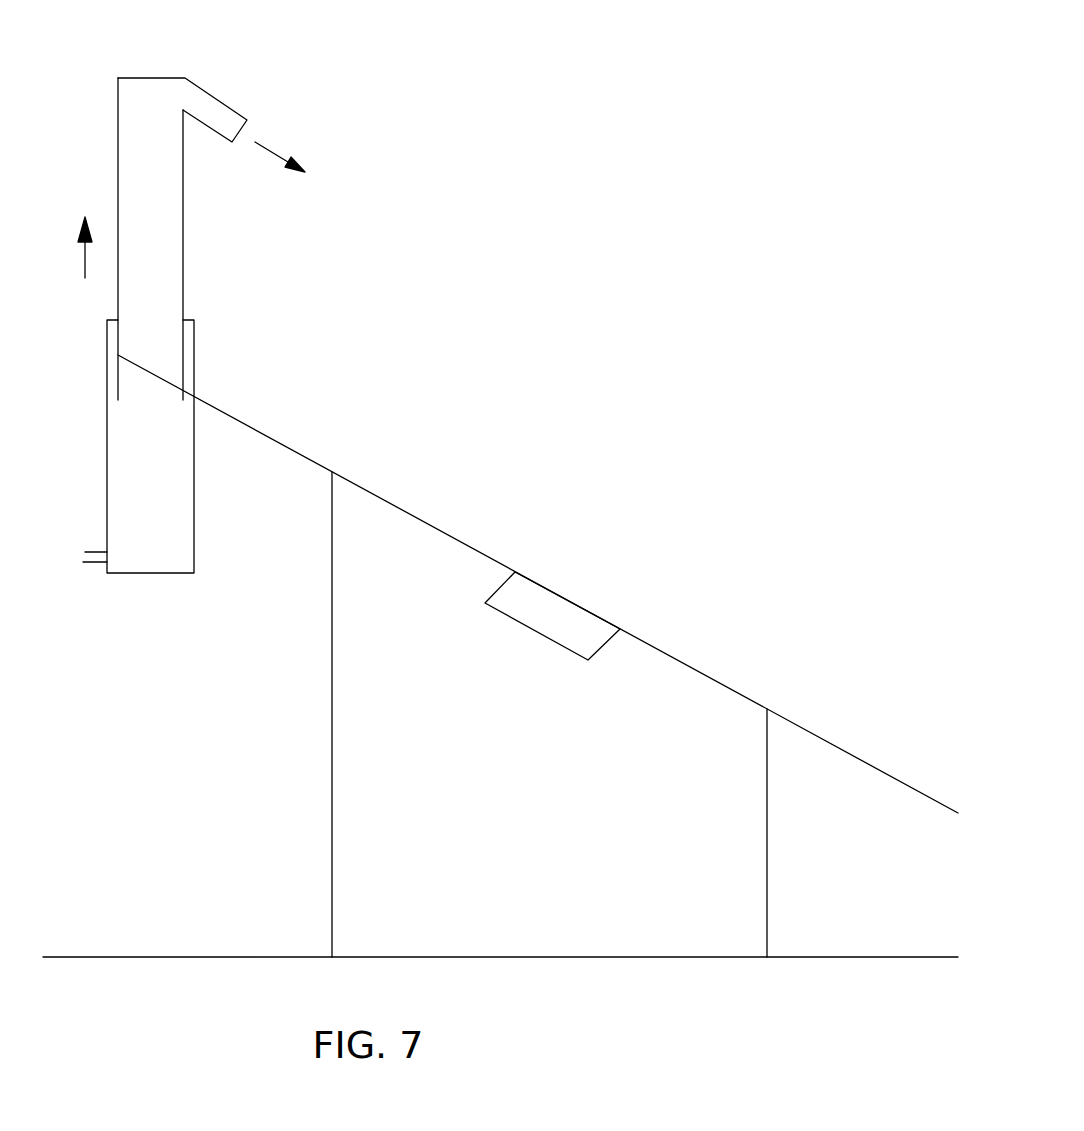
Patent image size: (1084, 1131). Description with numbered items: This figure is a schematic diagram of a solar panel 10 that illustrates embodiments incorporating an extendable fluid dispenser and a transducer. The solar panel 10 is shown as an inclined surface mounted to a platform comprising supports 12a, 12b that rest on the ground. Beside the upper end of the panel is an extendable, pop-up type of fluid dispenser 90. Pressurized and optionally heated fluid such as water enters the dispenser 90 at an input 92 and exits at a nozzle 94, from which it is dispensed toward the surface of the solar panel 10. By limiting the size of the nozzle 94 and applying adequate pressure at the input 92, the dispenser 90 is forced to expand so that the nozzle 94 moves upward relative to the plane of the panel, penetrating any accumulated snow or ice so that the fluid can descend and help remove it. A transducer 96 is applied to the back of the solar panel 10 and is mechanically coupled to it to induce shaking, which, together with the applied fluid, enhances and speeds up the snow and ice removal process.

The solar panel 10 is at (695, 668).
The support 12a is at (334, 822).
The support 12b is at (768, 843).
The fluid dispenser 90 is at (195, 512).
The input 92 is at (100, 550).
The nozzle 94 is at (217, 98).
The transducer 96 is at (535, 633).